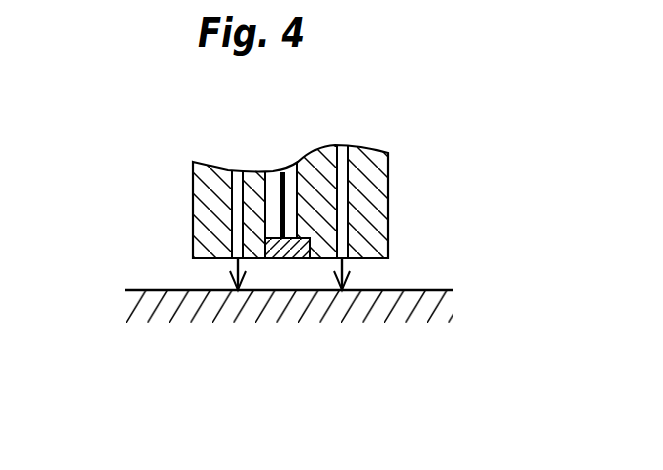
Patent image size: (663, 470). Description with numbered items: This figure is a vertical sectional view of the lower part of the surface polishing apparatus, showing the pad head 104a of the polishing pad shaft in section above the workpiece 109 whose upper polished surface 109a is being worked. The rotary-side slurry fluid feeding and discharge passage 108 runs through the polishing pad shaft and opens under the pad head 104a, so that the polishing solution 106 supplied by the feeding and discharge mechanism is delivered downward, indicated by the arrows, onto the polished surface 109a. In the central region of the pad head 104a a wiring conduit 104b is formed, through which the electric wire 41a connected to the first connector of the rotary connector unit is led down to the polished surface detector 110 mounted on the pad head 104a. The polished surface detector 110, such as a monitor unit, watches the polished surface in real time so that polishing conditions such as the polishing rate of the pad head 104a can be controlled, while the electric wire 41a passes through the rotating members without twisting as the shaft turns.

The pad head 104a is at (192, 230).
The wiring conduit 104b is at (273, 170).
The electric wire 41a is at (290, 170).
The slurry fluid feeding and discharge passage 108 is at (230, 184).
The polishing solution 106 is at (231, 283).
The polished surface detector 110 is at (290, 258).
The substrate 109 is at (157, 307).
The substrate surface 109a is at (418, 290).